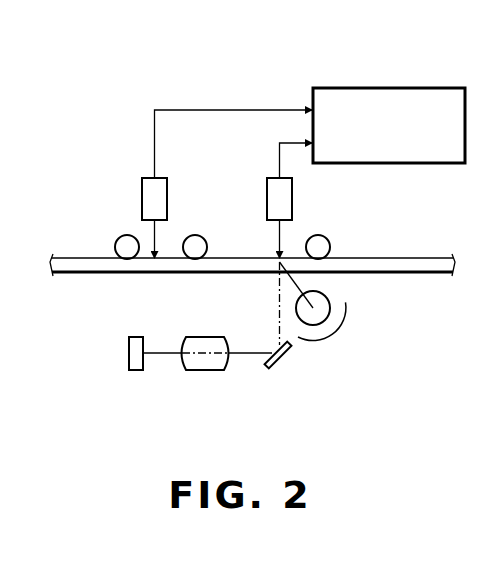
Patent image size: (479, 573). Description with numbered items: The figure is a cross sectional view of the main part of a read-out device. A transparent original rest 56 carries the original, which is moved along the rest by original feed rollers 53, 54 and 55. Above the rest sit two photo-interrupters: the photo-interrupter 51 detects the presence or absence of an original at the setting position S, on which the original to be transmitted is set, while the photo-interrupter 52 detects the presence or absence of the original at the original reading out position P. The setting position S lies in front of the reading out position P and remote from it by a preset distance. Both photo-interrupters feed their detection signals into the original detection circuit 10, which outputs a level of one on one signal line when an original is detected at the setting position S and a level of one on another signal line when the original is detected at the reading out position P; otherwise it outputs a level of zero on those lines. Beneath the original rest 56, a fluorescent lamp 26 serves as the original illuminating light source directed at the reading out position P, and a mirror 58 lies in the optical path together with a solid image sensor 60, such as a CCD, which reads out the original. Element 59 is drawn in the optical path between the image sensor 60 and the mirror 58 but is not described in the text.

The original detection circuit 10 is at (385, 88).
The photo-interrupter 51 is at (142, 183).
The photo-interrupter 52 is at (268, 183).
The original feed roller 53 is at (116, 242).
The original feed roller 54 is at (205, 239).
The original feed roller 55 is at (329, 241).
The transparent original rest 56 is at (418, 259).
The fluorescent lamp 26 is at (337, 316).
The mirror 58 is at (287, 361).
The lens 59 is at (201, 371).
The solid image sensor 60 is at (133, 371).
The setting position S is at (150, 261).
The original reading out position P is at (274, 262).